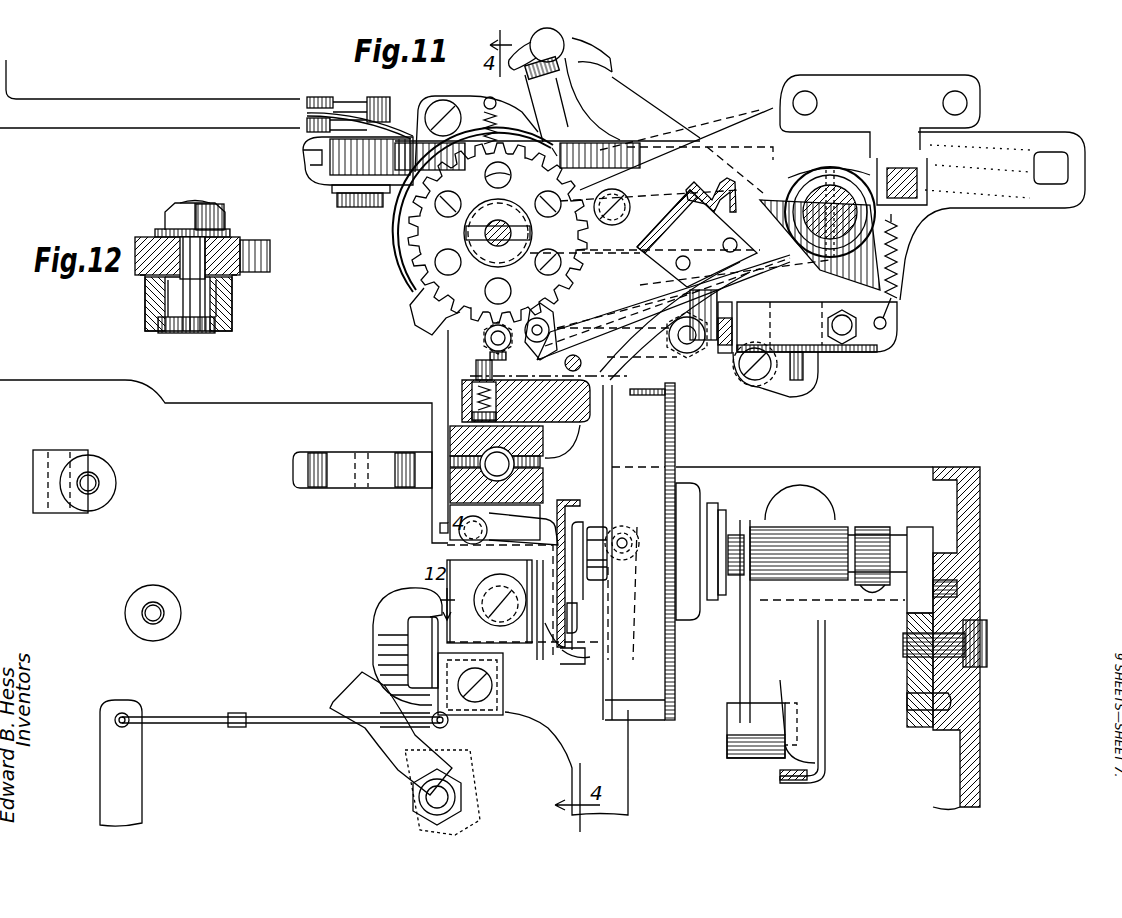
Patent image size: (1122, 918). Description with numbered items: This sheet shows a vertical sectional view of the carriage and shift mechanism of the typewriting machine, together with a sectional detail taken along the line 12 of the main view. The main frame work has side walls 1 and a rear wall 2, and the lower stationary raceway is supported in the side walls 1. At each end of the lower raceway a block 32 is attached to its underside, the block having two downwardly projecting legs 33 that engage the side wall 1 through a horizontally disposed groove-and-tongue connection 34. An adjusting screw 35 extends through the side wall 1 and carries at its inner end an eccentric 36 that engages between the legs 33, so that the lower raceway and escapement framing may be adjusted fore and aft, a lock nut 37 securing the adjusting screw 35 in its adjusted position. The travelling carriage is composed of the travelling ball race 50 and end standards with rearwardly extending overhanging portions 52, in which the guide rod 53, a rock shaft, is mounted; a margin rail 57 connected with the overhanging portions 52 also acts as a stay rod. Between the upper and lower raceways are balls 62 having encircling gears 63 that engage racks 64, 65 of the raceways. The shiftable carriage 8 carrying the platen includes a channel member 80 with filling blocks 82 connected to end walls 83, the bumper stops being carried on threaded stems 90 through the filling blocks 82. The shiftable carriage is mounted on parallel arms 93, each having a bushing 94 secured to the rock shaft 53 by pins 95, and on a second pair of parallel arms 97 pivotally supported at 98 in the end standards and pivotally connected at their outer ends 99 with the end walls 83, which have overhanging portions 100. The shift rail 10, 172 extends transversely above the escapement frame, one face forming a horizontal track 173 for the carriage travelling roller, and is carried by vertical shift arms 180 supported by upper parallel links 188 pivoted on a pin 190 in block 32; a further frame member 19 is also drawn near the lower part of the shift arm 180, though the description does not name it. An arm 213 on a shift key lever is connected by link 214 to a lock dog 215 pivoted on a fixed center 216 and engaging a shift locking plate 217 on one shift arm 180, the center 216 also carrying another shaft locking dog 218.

In FIG. 11, the side walls 1 is at (812, 482).
In FIG. 12, the side walls 1 is at (268, 262).
In FIG. 11, the rear wall 2 is at (982, 585).
In FIG. 11, the shiftable carriage 8 is at (720, 135).
In FIG. 11, the shift rail 10 is at (572, 652).
In FIG. 11, the section line 12 is at (573, 600).
In FIG. 11, the hook arm 19 is at (826, 778).
In FIG. 11, the block 32 is at (460, 522).
In FIG. 11, the downwardly projecting legs 33 is at (540, 672).
In FIG. 12, the groove-and-tongue connection 34 is at (234, 284).
In FIG. 11, the adjusting screw 35 is at (482, 598).
In FIG. 12, the adjusting screw 35 is at (212, 312).
In FIG. 11, the eccentric 36 is at (490, 615).
In FIG. 12, the eccentric 36 is at (195, 334).
In FIG. 12, the lock nut 37 is at (222, 226).
In FIG. 11, the travelling ball race 50 is at (452, 440).
In FIG. 11, the overhanging portions 52 is at (1030, 210).
In FIG. 11, the guide rod 53 is at (895, 245).
In FIG. 11, the margin rail 57 is at (915, 200).
In FIG. 11, the balls 62 is at (462, 510).
In FIG. 11, the encircling gears 63 is at (470, 476).
In FIG. 11, the rack 64 is at (450, 465).
In FIG. 11, the rack 65 is at (540, 463).
In FIG. 11, the channel member 80 is at (586, 408).
In FIG. 11, the filling blocks 82 is at (578, 424).
In FIG. 11, the end walls 83 is at (675, 150).
In FIG. 11, the threaded stem 90 is at (462, 392).
In FIG. 11, the parallel arms 93 is at (620, 250).
In FIG. 11, the bushing 94 is at (805, 170).
In FIG. 11, the pins 95 is at (775, 255).
In FIG. 11, the parallel arms 97 is at (660, 355).
In FIG. 11, the pivot 98 is at (692, 354).
In FIG. 11, the outer ends 99 is at (484, 342).
In FIG. 11, the overhanging portions 100 is at (880, 116).
In FIG. 11, the shift rail 172 is at (567, 666).
In FIG. 11, the horizontal track 173 is at (565, 500).
In FIG. 11, the vertical shift arms 180 is at (630, 785).
In FIG. 11, the upper parallel links 188 is at (610, 582).
In FIG. 11, the pin 190 is at (466, 534).
In FIG. 11, the arm 213 is at (138, 778).
In FIG. 11, the link 214 is at (282, 728).
In FIG. 11, the lock dog 215 is at (385, 613).
In FIG. 11, the center 216 is at (455, 798).
In FIG. 11, the shift locking plate 217 is at (425, 640).
In FIG. 11, the shaft locking dog 218 is at (370, 748).